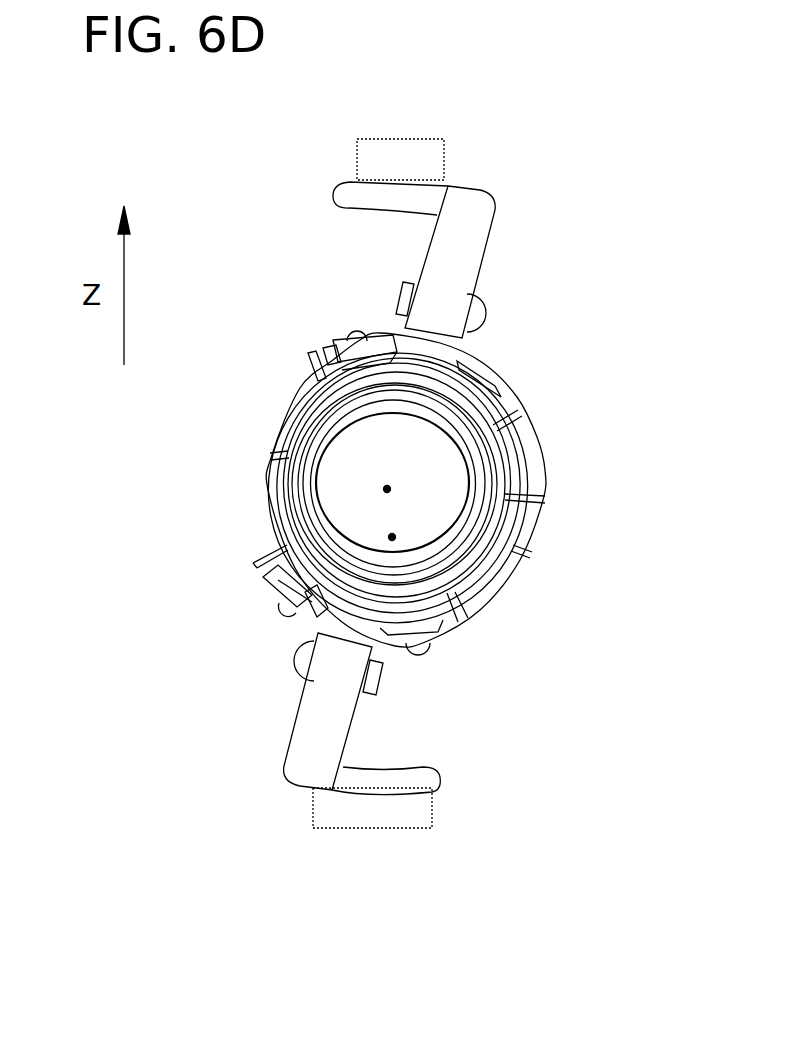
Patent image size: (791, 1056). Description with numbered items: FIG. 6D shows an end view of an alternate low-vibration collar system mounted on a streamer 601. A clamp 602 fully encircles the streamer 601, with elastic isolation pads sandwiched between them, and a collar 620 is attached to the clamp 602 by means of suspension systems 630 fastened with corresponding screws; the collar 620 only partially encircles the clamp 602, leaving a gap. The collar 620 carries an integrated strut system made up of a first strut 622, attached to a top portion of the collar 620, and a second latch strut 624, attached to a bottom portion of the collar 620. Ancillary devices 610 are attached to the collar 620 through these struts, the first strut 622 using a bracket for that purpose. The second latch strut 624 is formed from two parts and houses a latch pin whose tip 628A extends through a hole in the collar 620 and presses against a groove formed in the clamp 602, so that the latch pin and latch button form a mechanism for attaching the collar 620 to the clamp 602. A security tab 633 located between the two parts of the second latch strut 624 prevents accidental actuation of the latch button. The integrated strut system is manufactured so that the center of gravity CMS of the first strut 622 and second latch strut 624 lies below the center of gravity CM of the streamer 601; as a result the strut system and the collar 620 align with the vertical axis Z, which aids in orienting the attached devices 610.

The streamer 601 is at (281, 483).
The clamp 602 is at (287, 435).
The ancillary device 610 is at (403, 139).
The collar 620 is at (525, 455).
The first strut 622 is at (455, 278).
The second latch strut 624 is at (332, 738).
The tip 628A is at (354, 611).
The suspension system 630 is at (527, 528).
The security tab 633 is at (379, 678).
The center of gravity of the streamer CM is at (387, 488).
The center of gravity of the first strut and second latching strut CMS is at (392, 536).